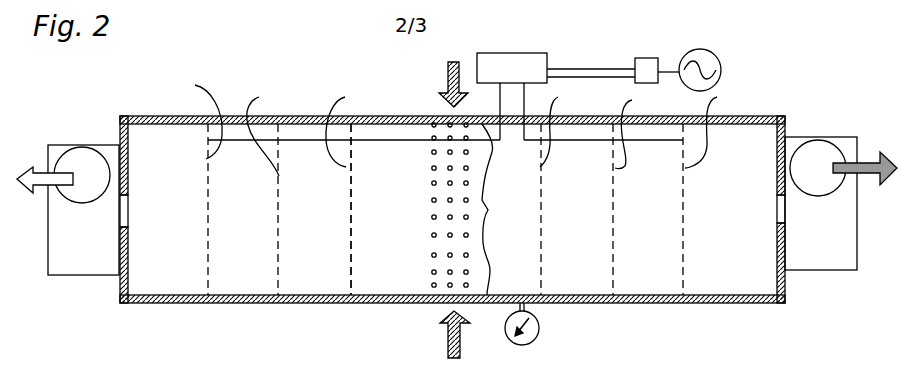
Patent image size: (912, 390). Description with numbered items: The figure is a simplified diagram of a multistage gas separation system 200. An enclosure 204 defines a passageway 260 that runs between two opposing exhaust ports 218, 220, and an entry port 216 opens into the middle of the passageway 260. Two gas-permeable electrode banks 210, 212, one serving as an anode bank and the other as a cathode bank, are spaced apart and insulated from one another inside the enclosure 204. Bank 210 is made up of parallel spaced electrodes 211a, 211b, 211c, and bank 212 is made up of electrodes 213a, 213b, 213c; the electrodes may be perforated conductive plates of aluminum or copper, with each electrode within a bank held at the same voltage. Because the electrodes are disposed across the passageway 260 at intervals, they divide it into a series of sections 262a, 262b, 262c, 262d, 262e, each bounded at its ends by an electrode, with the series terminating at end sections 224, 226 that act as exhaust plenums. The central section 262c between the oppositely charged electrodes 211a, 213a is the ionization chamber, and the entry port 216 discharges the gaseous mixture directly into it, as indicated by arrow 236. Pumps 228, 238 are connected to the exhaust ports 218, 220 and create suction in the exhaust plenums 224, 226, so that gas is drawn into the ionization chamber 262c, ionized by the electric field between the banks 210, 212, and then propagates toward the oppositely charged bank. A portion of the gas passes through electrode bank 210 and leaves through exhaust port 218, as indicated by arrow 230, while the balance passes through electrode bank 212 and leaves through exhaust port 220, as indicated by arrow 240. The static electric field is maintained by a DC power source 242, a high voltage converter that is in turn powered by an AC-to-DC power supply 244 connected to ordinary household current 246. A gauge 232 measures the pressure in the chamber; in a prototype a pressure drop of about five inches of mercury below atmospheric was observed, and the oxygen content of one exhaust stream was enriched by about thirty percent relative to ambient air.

The system 200 is at (275, 53).
The enclosure 204 is at (148, 116).
The electrode bank 210 is at (362, 304).
The electrode 211a is at (362, 127).
The electrode 211b is at (284, 131).
The electrode 211c is at (182, 116).
The electrode bank 212 is at (698, 304).
The electrode 213a is at (576, 127).
The electrode 213b is at (652, 129).
The electrode 213c is at (727, 128).
The entry port 216 is at (488, 210).
The exhaust port 218 is at (128, 228).
The exhaust port 220 is at (785, 224).
The exhaust plenum 224 is at (151, 212).
The exhaust plenum 226 is at (713, 212).
The pump 228 is at (800, 138).
The arrow 230 is at (50, 186).
The gauge 232 is at (530, 341).
The arrow 236 is at (448, 85).
The pump 238 is at (75, 265).
The arrow 240 is at (862, 167).
The DC power source 242 is at (512, 58).
The power supply 244 is at (643, 72).
The household current 246 is at (704, 62).
The passageway 260 is at (405, 244).
The section 262a is at (220, 212).
The section 262b is at (291, 212).
The ionization chamber 262c is at (372, 212).
The section 262d is at (554, 212).
The section 262e is at (625, 212).